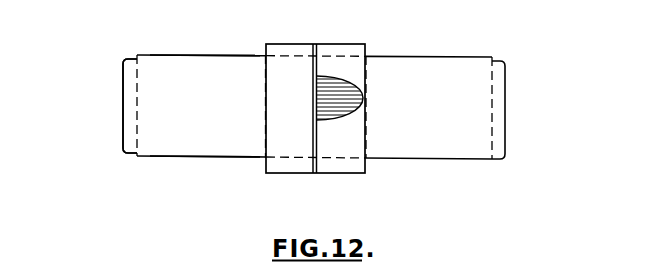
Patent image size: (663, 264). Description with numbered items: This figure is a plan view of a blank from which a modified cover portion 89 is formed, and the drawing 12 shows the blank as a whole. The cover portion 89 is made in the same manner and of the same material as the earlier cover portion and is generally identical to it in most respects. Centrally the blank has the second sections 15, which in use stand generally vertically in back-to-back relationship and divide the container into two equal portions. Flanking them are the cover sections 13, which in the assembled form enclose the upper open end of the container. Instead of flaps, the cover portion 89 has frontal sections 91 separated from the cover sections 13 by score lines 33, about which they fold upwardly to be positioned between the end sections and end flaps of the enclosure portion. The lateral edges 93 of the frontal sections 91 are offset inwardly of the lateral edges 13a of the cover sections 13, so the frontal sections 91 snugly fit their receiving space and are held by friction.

The hatched slot 12 is at (364, 91).
The first sections 13 is at (321, 107).
The lateral edges 13a is at (190, 55).
The second sections 15 is at (316, 108).
The score lines 33 is at (138, 101).
The cover portion 89 is at (215, 158).
The frontal sections 91 is at (133, 120).
The lateral edges 93 is at (130, 57).